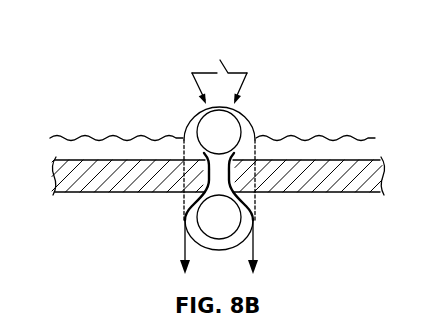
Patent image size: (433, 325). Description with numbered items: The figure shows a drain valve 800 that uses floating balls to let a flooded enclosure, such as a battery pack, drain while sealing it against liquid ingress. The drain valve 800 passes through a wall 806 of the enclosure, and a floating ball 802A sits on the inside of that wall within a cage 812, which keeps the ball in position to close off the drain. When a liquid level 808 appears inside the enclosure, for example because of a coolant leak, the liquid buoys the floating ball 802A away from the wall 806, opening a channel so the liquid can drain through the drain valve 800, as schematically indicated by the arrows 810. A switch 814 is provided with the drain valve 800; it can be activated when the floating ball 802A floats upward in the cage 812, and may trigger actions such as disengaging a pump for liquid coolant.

The drain valve 800 is at (106, 52).
The floating ball 802A is at (247, 130).
The wall 806 is at (360, 193).
The liquid level 808 is at (84, 137).
The arrows 810 is at (183, 247).
The cage 812 is at (256, 204).
The switch 814 is at (241, 72).